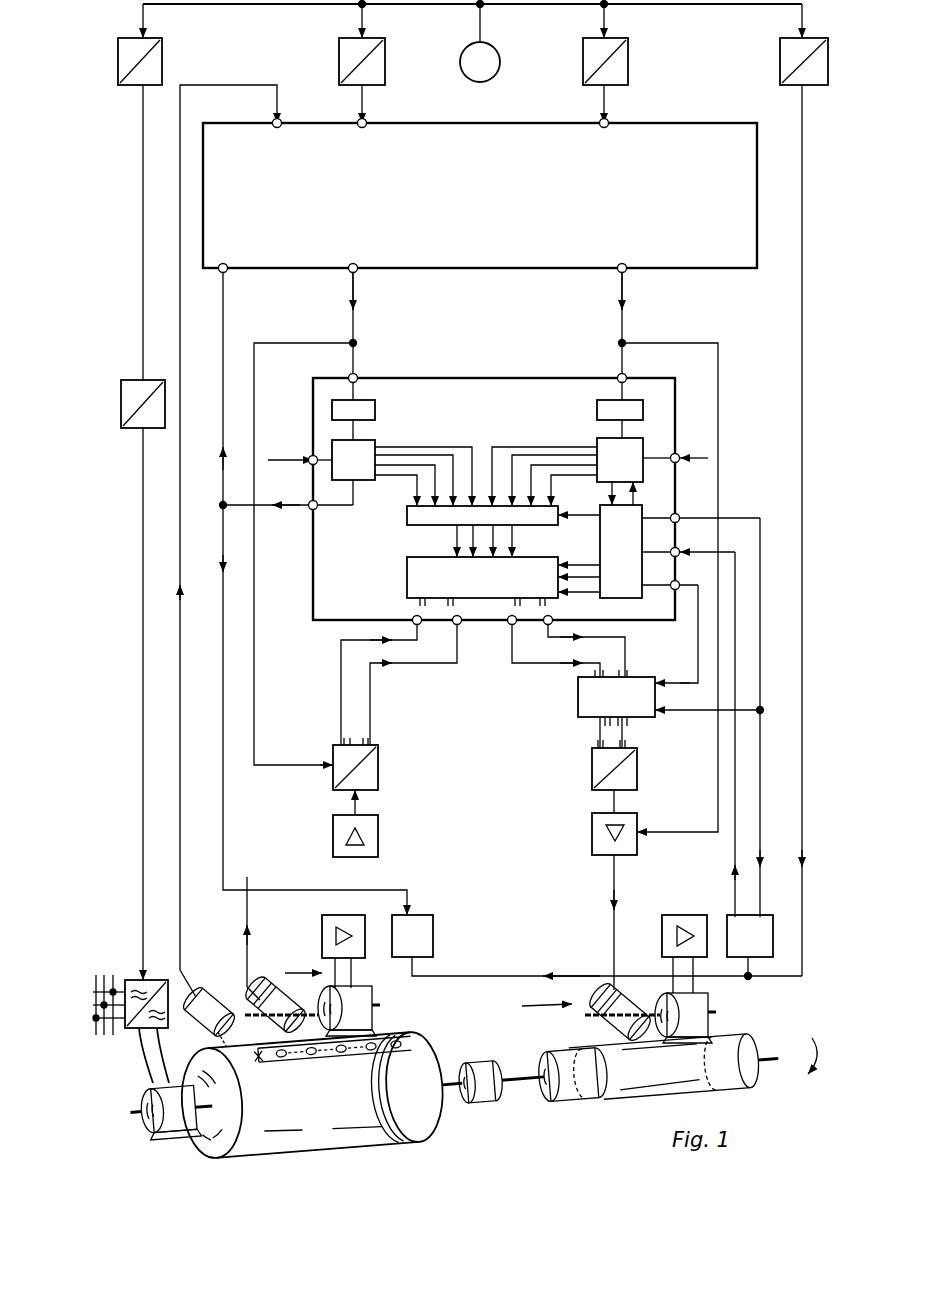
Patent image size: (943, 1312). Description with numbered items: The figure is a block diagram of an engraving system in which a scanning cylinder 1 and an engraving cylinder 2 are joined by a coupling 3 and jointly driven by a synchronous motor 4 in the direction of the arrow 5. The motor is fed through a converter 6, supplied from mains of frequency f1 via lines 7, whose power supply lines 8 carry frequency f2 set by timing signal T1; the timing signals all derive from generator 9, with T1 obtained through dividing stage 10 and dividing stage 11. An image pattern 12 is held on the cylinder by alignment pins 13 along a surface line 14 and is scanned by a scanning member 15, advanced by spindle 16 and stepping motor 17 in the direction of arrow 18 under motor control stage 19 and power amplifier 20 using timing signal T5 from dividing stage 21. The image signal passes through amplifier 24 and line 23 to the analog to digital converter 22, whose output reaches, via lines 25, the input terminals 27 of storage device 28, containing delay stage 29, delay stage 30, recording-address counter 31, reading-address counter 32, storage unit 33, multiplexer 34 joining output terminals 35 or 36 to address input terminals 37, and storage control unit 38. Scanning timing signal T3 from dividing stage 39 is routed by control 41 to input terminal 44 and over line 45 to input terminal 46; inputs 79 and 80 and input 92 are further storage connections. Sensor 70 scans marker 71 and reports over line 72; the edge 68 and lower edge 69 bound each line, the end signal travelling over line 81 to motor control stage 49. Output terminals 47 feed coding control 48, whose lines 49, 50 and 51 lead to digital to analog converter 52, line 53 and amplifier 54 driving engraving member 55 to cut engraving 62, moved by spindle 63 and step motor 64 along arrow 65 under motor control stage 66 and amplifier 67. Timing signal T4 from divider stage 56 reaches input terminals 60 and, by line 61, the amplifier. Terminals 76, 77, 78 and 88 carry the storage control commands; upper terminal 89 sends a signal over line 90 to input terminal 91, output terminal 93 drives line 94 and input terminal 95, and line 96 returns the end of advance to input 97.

The scanning cylinder 1 is at (438, 1102).
The engraving cylinder 2 is at (566, 1100).
The coupling 3 is at (490, 1094).
The synchronous motor 4 is at (148, 1130).
The arrow 5 is at (806, 1038).
The converter 6 is at (150, 978).
The mains supply 7 is at (110, 1032).
The power supply lines 8 is at (146, 1050).
The generator 9 is at (499, 64).
The first dividing stage 10 is at (164, 60).
The dividing stage 11 is at (146, 380).
The image pattern 12 is at (424, 1134).
The alignment pins 13 is at (400, 1054).
The surface line 14 is at (420, 1046).
The scanning member 15 is at (260, 1004).
The spindle 16 is at (308, 1014).
The stepping motor 17 is at (376, 1004).
The arrow 18 is at (298, 974).
The motor control stage 19 is at (430, 926).
The power amplifier 20 is at (326, 930).
The dividing stage 21 is at (780, 66).
The analog to digital converter 22 is at (378, 762).
The line 23 is at (360, 794).
The amplifier 24 is at (333, 838).
The lines 25 is at (359, 742).
The input terminals 27 is at (436, 624).
The storage device 28 is at (314, 583).
The delay stage 29 is at (372, 414).
The delay stage 30 is at (594, 410).
The recording-address counter 31 is at (358, 476).
The reading-address counter 32 is at (628, 456).
The storage unit 33 is at (416, 582).
The multiplexer 34 is at (406, 524).
The output terminals 35 is at (382, 452).
The output terminals 36 is at (576, 448).
The address input terminals 37 is at (448, 550).
The storage control unit 38 is at (626, 524).
The dividing stage 39 is at (385, 56).
The control 41 is at (474, 268).
The input terminal 44 is at (356, 376).
The line 45 is at (258, 668).
The input terminal 46 is at (332, 762).
The output terminals 47 is at (534, 624).
The coding control 48 is at (570, 698).
The motor control stage 49 is at (610, 678).
The lines 50 is at (630, 724).
The lines 51 is at (596, 738).
The digital to analog converter 52 is at (592, 778).
The line 53 is at (608, 796).
The amplifier 54 is at (638, 832).
The engraving member 55 is at (598, 1014).
The divider stage 56 is at (628, 57).
The input terminals 60 is at (618, 374).
The line 61 is at (718, 436).
The engraving 62 is at (632, 1082).
The spindle 63 is at (644, 1014).
The step motor 64 is at (706, 1006).
The arrow 65 is at (534, 1004).
The motor control stage 66 is at (736, 922).
The amplifier 67 is at (672, 922).
The edge 68 is at (284, 1070).
The lower edge 69 is at (286, 1146).
The sensor 70 is at (208, 996).
The marker 71 is at (264, 1066).
The line 72 is at (180, 672).
The terminal 76 is at (562, 518).
The control input terminal 77 is at (566, 566).
The terminal 78 is at (566, 578).
The input 79 is at (308, 456).
The output 80 is at (310, 510).
The line 81 is at (222, 410).
The input terminal 88 is at (560, 592).
The upper terminal 89 is at (676, 584).
The line 90 is at (696, 620).
The input terminal 91 is at (680, 676).
The input 92 is at (676, 458).
The output terminal 93 is at (676, 518).
The line 94 is at (760, 642).
The input terminal 95 is at (660, 710).
The line 96 is at (742, 854).
The input 97 is at (676, 552).
The timing signal T1 is at (143, 854).
The scanning timing signal T3 is at (352, 324).
The timing signal T4 is at (624, 326).
The timing signal T5 is at (806, 834).
The frequency f1 is at (104, 980).
The frequency f2 is at (166, 1068).